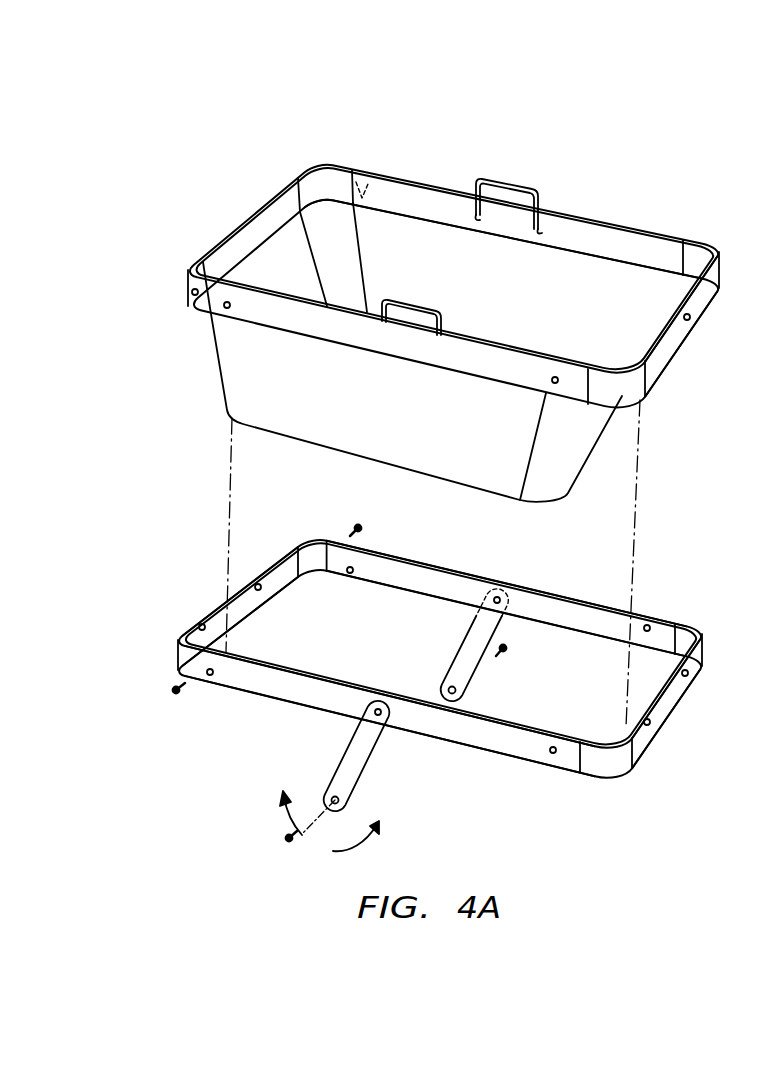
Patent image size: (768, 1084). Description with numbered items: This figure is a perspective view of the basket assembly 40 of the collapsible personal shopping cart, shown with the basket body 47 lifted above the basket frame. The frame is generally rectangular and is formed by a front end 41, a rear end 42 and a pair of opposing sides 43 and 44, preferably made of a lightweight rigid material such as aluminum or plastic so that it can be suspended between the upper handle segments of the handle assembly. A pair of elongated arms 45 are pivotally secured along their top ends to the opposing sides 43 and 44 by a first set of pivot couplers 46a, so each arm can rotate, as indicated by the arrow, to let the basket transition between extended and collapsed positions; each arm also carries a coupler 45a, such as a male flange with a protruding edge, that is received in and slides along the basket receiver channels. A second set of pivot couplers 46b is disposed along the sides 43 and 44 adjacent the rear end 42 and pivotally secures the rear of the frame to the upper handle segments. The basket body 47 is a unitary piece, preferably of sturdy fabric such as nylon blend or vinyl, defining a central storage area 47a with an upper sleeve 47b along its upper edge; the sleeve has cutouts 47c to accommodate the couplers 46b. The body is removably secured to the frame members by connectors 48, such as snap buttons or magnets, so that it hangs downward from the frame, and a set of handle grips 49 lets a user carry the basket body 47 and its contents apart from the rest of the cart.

The basket assembly 40 is at (218, 174).
The front end 41 is at (663, 712).
The rear end 42 is at (210, 608).
The side 43 is at (548, 592).
The side 44 is at (479, 745).
The elongated arm 45 is at (462, 655).
The coupler 45a is at (505, 651).
The first set of pivot couplers 46a is at (494, 596).
The second set of pivot couplers 46b is at (355, 529).
The basket body 47 is at (413, 418).
The central storage area 47a is at (578, 276).
The upper sleeve 47b is at (665, 345).
The cutouts 47c is at (364, 180).
The connectors 48 is at (192, 291).
The handle grips 49 is at (520, 188).